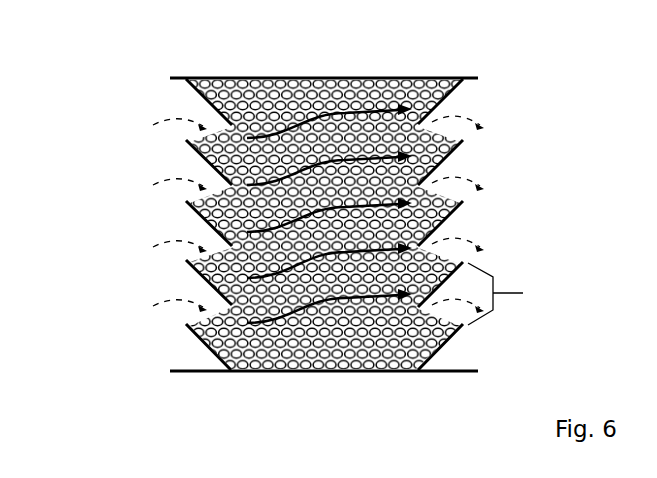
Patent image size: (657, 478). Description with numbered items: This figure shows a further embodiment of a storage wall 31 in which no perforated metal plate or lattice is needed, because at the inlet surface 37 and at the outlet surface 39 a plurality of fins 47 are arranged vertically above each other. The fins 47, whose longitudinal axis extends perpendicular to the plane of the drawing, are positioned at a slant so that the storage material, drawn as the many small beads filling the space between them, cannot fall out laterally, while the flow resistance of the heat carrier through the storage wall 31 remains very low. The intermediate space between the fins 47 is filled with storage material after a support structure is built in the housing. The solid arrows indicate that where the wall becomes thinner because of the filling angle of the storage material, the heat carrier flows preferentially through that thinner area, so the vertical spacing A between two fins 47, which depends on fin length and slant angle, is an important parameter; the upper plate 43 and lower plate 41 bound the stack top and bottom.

The storage wall 31 is at (292, 93).
The top plate 43 is at (405, 82).
The bottom plate 41 is at (430, 372).
The fins 47 is at (450, 96).
The inlet surface 37 is at (186, 168).
The outlet surface 39 is at (458, 165).
The vertical spacing A is at (502, 294).